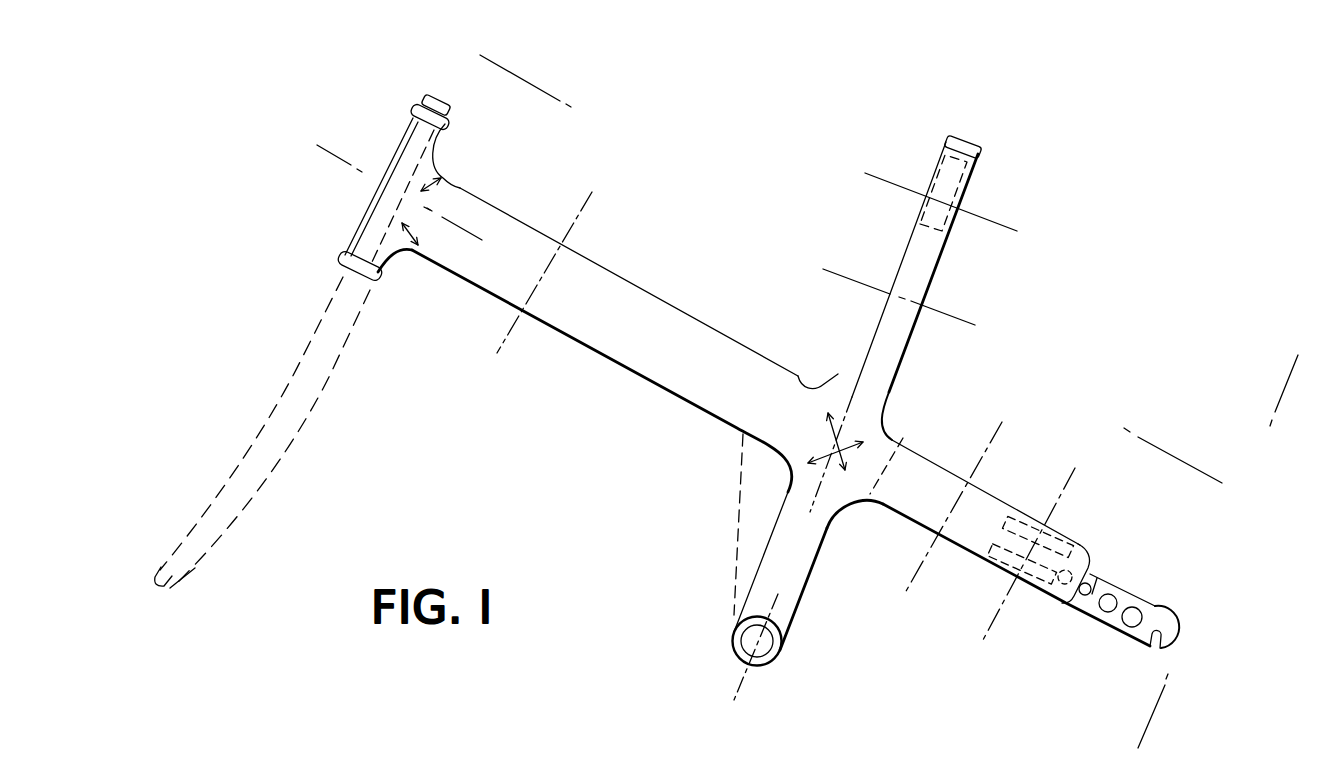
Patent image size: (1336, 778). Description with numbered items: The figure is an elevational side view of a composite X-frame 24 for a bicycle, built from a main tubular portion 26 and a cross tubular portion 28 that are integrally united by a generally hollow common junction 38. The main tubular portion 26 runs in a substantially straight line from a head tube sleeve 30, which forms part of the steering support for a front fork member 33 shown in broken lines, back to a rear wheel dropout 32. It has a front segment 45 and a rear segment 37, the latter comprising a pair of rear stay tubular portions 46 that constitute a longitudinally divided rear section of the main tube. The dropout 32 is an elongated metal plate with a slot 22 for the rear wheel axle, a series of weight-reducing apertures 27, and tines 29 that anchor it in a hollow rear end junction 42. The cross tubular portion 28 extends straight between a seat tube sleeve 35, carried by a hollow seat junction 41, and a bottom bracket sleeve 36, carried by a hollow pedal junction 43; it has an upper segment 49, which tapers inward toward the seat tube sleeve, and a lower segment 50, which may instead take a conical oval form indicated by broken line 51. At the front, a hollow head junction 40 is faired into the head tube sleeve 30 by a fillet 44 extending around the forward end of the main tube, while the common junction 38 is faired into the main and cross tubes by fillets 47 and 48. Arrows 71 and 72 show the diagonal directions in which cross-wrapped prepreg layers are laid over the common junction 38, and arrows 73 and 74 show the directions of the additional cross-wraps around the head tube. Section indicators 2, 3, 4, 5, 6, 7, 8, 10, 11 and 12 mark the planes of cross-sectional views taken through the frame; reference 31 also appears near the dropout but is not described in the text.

The section line 2- 2 is at (552, 23).
The section line 3- 3 is at (1335, 397).
The section line 4- 4 is at (645, 238).
The section line 5- 5 is at (1043, 465).
The section line 6- 6 is at (1118, 507).
The section line 7- 7 is at (853, 221).
The section line 8- 8 is at (816, 320).
The section line 10- 10 is at (718, 580).
The section line 11- 11 is at (329, 126).
The section line 12- 12 is at (815, 356).
The slot 22 is at (1156, 650).
The composite X-frame 24 is at (620, 414).
The main tubular portion 26 is at (652, 288).
The apertures 27 is at (1135, 606).
The cross tubular portion 28 is at (935, 289).
The tines 29 is at (1052, 547).
The head tube sleeve 30 is at (400, 152).
The hole in mounting plate 31 is at (1036, 588).
The rear wheel dropout 32 is at (1168, 616).
The front fork member 33 is at (306, 358).
The seat tube sleeve 35 is at (940, 180).
The bottom bracket sleeve 36 is at (782, 658).
The rear segment 37 is at (925, 442).
The common junction 38 is at (874, 437).
The head junction 40 is at (441, 160).
The seat junction 41 is at (963, 190).
The rear end junction 42 is at (1080, 547).
The pedal junction 43 is at (782, 622).
The fillet 44 is at (412, 255).
The front segment 45 is at (704, 348).
The rear stay tubular portion 46 is at (914, 507).
The fillet 47 is at (808, 380).
The fillet 48 is at (882, 423).
The upper segment 49 is at (912, 265).
The lower segment 50 is at (805, 553).
The broken line 51 is at (742, 500).
The arrow 71 is at (828, 422).
The arrow 72 is at (823, 447).
The arrow 73 is at (447, 186).
The arrow 74 is at (404, 252).